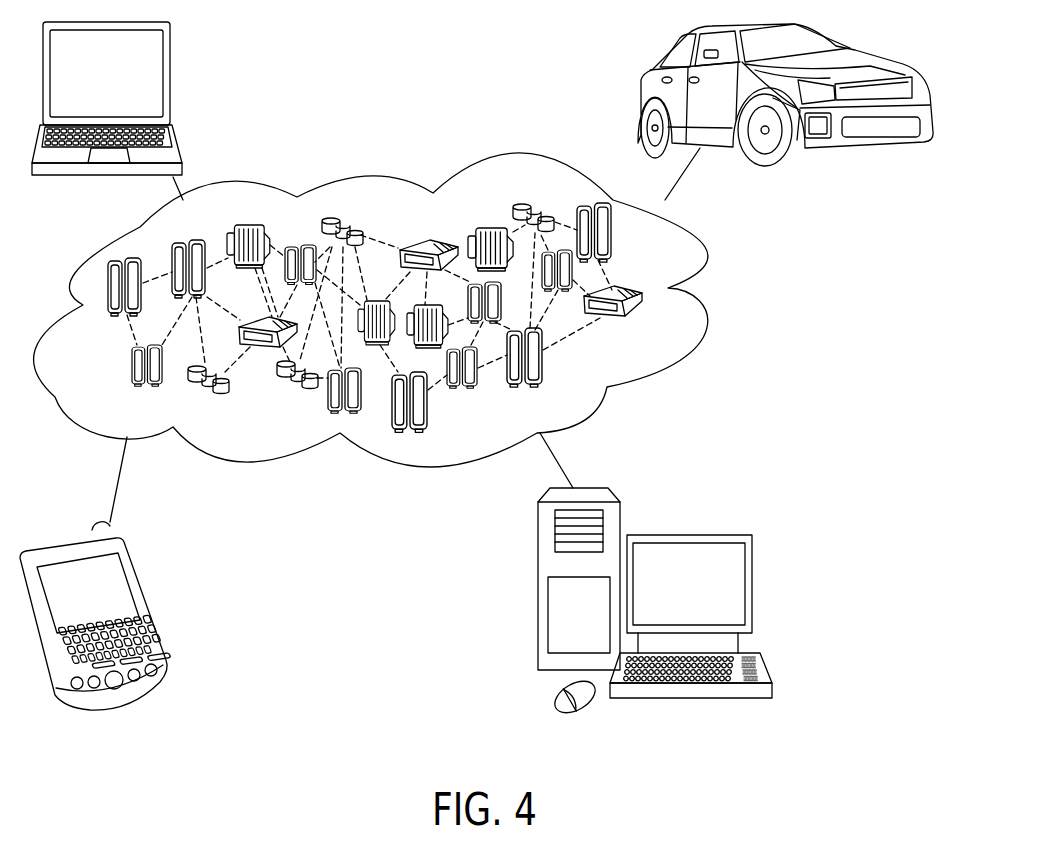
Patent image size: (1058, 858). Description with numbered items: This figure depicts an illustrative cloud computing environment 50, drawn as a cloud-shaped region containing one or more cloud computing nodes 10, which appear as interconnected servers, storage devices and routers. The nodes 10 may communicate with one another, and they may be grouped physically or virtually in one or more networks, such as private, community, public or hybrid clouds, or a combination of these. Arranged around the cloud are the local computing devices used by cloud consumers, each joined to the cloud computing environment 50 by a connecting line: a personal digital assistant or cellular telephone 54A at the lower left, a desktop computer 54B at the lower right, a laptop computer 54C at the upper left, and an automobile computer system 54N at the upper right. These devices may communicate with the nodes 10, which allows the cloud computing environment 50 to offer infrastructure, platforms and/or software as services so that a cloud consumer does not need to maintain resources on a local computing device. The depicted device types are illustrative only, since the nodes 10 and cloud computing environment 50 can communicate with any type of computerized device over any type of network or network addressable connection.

The laptop computer 54C is at (137, 98).
The automobile computer system 54N is at (785, 89).
The cloud computing environment 50 is at (400, 310).
The cloud computing node 10 is at (665, 346).
The personal digital assistant or cellular telephone 54A is at (115, 616).
The desktop computer 54B is at (680, 603).